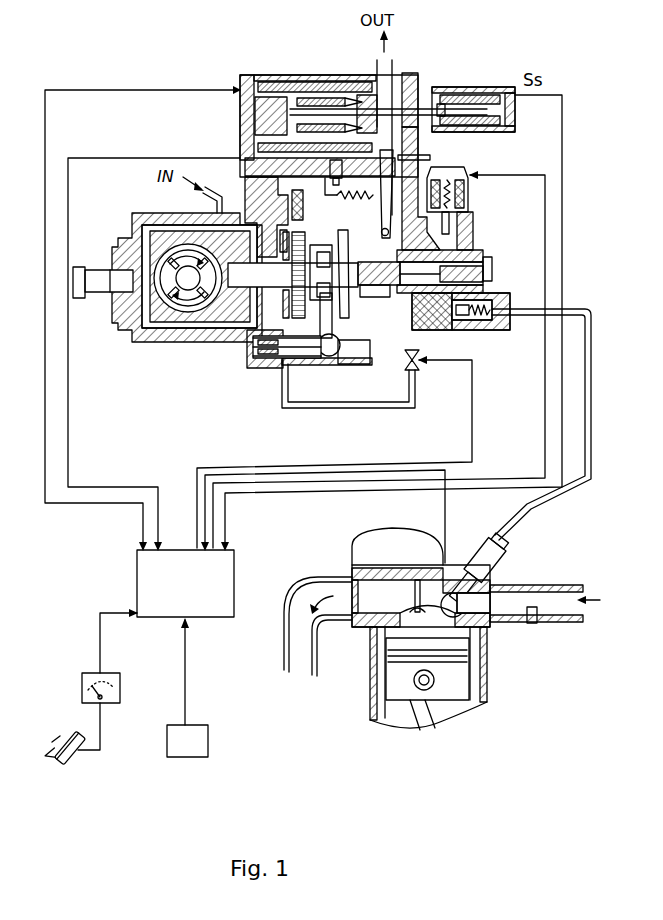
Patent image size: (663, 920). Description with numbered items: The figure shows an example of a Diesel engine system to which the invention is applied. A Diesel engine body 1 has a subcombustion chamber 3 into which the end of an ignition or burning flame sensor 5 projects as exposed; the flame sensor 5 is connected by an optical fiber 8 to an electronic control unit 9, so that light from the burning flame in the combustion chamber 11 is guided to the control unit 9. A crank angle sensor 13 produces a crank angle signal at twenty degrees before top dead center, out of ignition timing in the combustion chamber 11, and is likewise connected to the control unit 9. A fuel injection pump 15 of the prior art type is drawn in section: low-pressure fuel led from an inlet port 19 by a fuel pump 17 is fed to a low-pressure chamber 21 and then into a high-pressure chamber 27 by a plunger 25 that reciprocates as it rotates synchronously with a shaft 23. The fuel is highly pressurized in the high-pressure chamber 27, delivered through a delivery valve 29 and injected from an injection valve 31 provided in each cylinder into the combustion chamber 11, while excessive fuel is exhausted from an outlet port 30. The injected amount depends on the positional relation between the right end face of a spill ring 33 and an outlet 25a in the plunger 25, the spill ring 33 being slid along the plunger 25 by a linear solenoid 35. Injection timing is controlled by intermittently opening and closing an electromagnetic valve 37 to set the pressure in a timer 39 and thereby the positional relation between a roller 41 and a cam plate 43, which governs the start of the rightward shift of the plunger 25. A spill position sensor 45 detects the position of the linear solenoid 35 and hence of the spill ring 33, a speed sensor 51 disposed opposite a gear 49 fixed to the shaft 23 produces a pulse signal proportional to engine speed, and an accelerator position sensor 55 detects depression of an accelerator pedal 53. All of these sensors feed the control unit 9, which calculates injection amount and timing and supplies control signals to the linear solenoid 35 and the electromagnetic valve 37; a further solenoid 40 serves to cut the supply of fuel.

The Diesel engine body 1 is at (350, 552).
The subcombustion chamber 3 is at (483, 630).
The flame sensor 5 is at (430, 566).
The optical fiber 8 is at (448, 503).
The electronic control unit 9 is at (235, 585).
The combustion chamber 11 is at (373, 648).
The crank angle sensor 13 is at (208, 743).
The fuel injection pump 15 is at (155, 351).
The fuel pump 17 is at (190, 303).
The inlet port 19 is at (212, 194).
The low-pressure chamber 21 is at (263, 205).
The shaft 23 is at (99, 290).
The plunger 25 is at (483, 249).
The outlet 25a is at (388, 297).
The high-pressure chamber 27 is at (452, 333).
The delivery valve 29 is at (500, 300).
The outlet port 30 is at (390, 66).
The injection valve 31 is at (482, 549).
The spill ring 33 is at (376, 250).
The linear solenoid 35 is at (281, 71).
The electromagnetic valve 37 is at (420, 366).
The timer 39 is at (358, 358).
The solenoid 40 is at (448, 166).
The roller 41 is at (324, 300).
The cam plate 43 is at (343, 320).
The spill position sensor 45 is at (475, 90).
The gear 49 is at (300, 243).
The speed sensor 51 is at (248, 173).
The accelerator pedal 53 is at (80, 764).
The accelerator position sensor 55 is at (82, 688).